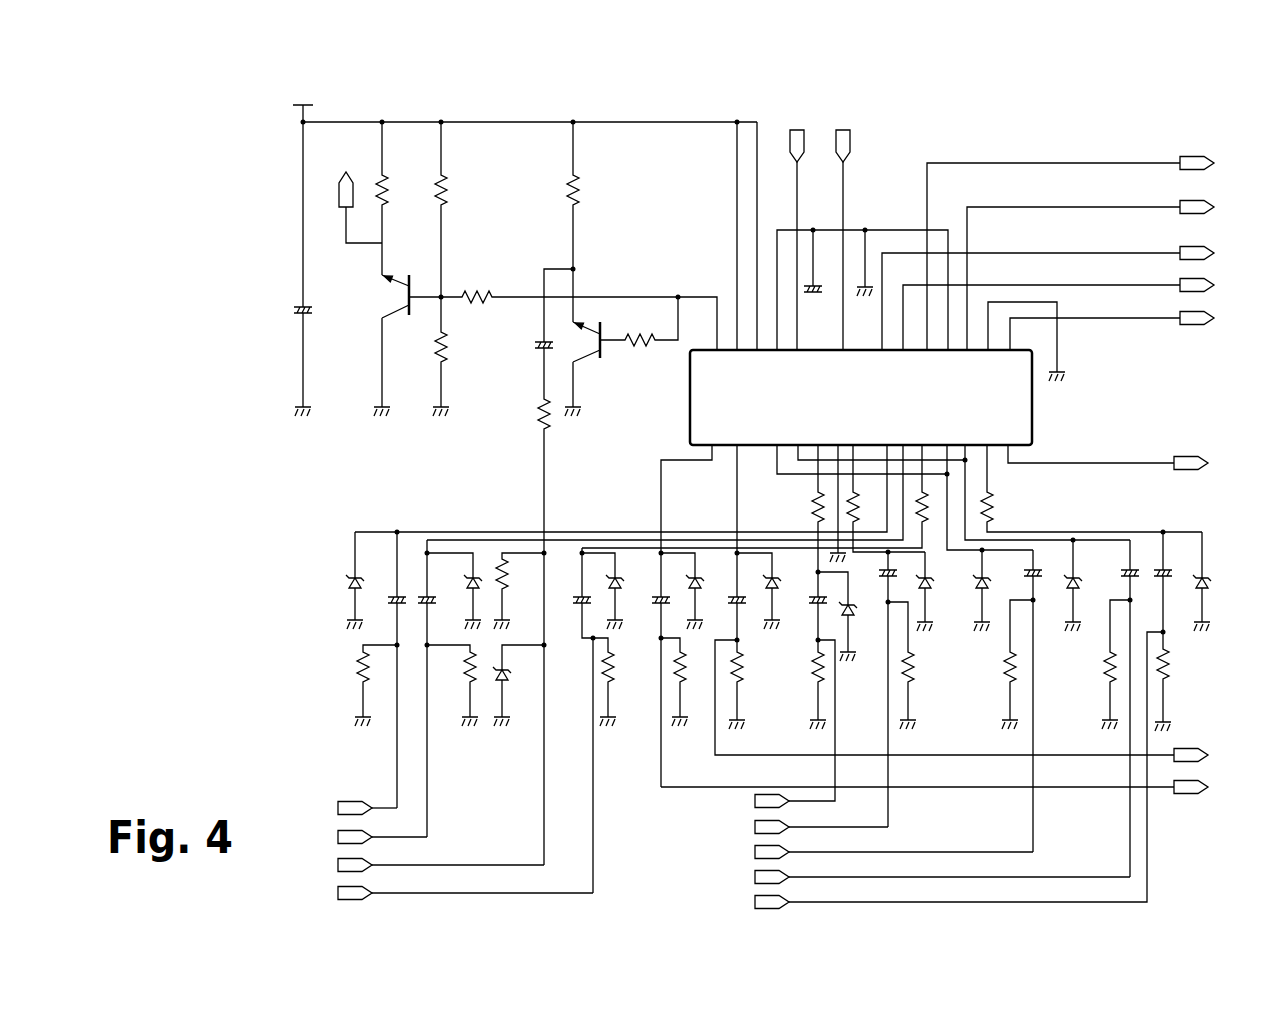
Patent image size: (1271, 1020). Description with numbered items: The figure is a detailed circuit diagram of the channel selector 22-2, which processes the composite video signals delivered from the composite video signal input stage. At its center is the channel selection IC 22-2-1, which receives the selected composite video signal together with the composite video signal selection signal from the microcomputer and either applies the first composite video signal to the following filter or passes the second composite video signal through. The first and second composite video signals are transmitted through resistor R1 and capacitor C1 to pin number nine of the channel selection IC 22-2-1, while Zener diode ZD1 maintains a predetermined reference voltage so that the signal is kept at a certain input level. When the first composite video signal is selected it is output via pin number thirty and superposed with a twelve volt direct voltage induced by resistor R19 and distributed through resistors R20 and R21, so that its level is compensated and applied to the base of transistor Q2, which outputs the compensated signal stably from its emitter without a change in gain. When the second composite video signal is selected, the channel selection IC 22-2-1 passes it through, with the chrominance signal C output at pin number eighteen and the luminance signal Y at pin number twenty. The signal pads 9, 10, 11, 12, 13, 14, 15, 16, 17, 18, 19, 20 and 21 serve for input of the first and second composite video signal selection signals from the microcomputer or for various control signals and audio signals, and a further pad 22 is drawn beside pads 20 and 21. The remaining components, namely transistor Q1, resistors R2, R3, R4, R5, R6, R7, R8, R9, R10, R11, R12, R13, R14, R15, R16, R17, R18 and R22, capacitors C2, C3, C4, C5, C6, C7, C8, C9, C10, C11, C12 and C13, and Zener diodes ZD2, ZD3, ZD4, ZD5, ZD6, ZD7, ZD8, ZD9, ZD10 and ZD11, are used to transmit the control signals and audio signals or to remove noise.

The channel selector 22-2 is at (1086, 73).
The channel selection IC 22-2-1 is at (1033, 426).
The signal pad 9 is at (382, 838).
The signal pad 10 is at (441, 866).
The signal pad 11 is at (465, 894).
The signal pad 12 is at (795, 724).
The signal pad 13 is at (821, 828).
The signal pad 14 is at (894, 853).
The signal pad 15 is at (942, 878).
The signal pad 16 is at (959, 770).
The signal pad 17 is at (934, 788).
The signal pad 18 is at (961, 701).
The signal pad 19 is at (1108, 457).
The signal pad 20 is at (1112, 331).
The signal pad 21 is at (1058, 315).
The terminal 22 is at (1048, 299).
The transistor Q1 is at (582, 369).
The transistor Q2 is at (391, 345).
The resistor R1 is at (376, 685).
The resistor R2 is at (452, 685).
The resistor R3 is at (519, 591).
The resistor R4 is at (616, 688).
The resistor R5 is at (764, 496).
The resistor R6 is at (683, 682).
The resistor R7 is at (745, 689).
The resistor R8 is at (807, 689).
The resistor R9 is at (807, 508).
The resistor R10 is at (915, 665).
The resistor R11 is at (886, 498).
The resistor R12 is at (1004, 664).
The resistor R13 is at (1100, 664).
The resistor R14 is at (1177, 689).
The resistor R15 is at (1091, 488).
The resistor R16 is at (641, 350).
The resistor R17 is at (527, 415).
The resistor R18 is at (587, 195).
The resistor R19 is at (478, 289).
The resistor R20 is at (455, 209).
The resistor R21 is at (454, 356).
The resistor R22 is at (397, 198).
The capacitor C1 is at (385, 596).
The capacitor C2 is at (433, 596).
The capacitor C3 is at (571, 596).
The capacitor C4 is at (647, 596).
The capacitor C5 is at (724, 596).
The capacitor C6 is at (805, 595).
The capacitor C7 is at (877, 569).
The capacitor C8 is at (1019, 569).
The capacitor C9 is at (1117, 569).
The capacitor C10 is at (1172, 565).
The capacitor C11 is at (821, 261).
The capacitor C12 is at (527, 341).
The capacitor C13 is at (315, 354).
The Zener diode ZD1 is at (334, 580).
The Zener diode ZD2 is at (454, 591).
The Zener diode ZD3 is at (518, 685).
The Zener diode ZD4 is at (615, 591).
The Zener diode ZD5 is at (694, 591).
The Zener diode ZD6 is at (770, 591).
The Zener diode ZD7 is at (849, 616).
The Zener diode ZD8 is at (936, 591).
The Zener diode ZD9 is at (996, 590).
The Zener diode ZD10 is at (1092, 585).
The Zener diode ZD11 is at (1223, 581).